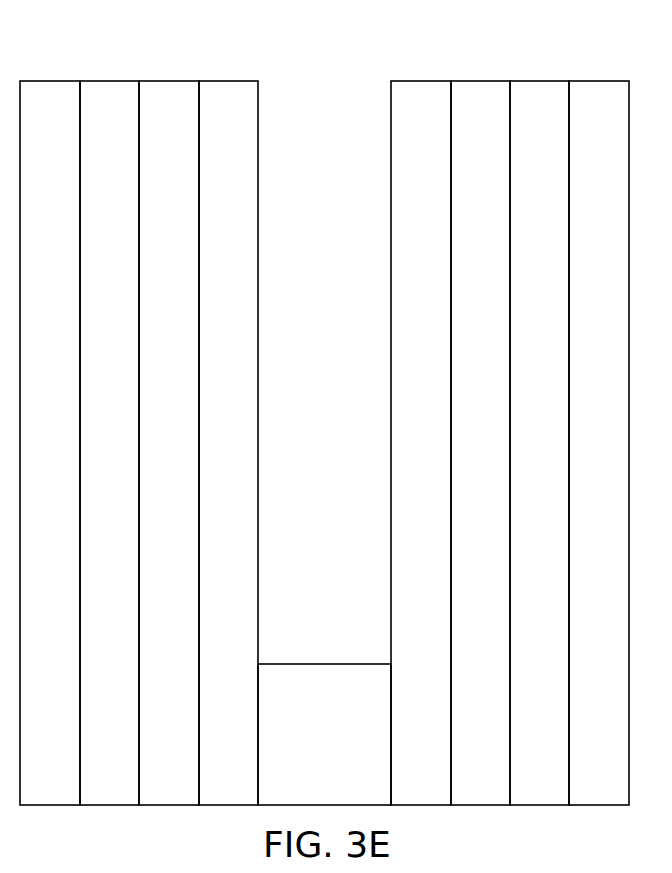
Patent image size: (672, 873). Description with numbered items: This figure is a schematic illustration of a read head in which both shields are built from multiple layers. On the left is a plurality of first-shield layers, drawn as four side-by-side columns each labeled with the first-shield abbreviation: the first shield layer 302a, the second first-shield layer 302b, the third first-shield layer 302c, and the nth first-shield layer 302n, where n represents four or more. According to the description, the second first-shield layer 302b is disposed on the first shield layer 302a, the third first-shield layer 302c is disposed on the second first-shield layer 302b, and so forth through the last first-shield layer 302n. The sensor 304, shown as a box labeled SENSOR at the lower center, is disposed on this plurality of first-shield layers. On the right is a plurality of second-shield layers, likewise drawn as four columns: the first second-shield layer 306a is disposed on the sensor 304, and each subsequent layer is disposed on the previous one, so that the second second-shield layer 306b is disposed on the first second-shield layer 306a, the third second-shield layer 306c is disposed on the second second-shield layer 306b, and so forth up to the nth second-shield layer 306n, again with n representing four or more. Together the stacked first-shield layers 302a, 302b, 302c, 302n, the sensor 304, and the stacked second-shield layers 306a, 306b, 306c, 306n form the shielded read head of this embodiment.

The first S1 layer 302a is at (34, 80).
The second S1 layer 302b is at (110, 80).
The third S1 layer 302c is at (176, 80).
The nth S1 layer 302n is at (247, 80).
The sensor 304 is at (305, 772).
The first S2 layer 306a is at (405, 80).
The second S2 layer 306b is at (480, 80).
The third S2 layer 306c is at (546, 80).
The nth S2 layer 306n is at (617, 80).